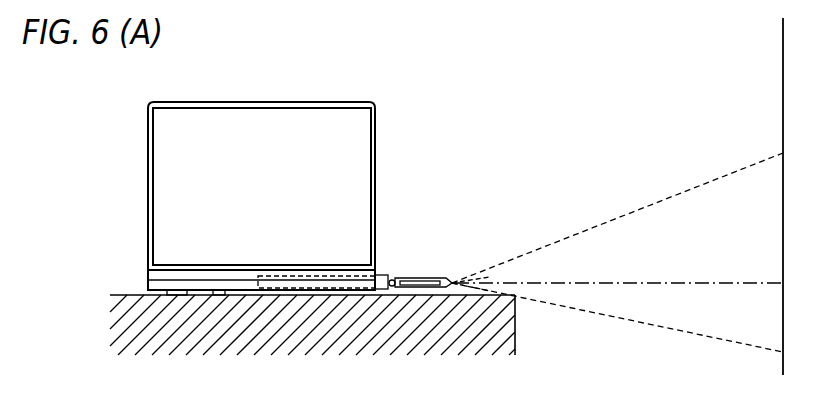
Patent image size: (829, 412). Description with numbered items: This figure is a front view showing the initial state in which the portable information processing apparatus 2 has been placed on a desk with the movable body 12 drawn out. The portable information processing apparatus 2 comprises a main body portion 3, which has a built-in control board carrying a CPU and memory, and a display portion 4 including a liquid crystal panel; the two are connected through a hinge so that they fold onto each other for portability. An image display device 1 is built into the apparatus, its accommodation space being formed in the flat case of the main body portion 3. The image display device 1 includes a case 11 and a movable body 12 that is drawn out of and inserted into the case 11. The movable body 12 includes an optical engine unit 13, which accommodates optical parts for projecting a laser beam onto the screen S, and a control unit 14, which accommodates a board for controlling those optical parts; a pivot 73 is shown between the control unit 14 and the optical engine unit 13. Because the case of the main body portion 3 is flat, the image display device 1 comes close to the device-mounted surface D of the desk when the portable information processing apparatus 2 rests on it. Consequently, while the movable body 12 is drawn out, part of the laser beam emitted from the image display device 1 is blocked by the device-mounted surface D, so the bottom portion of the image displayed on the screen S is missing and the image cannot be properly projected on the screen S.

The image display device 1 is at (452, 270).
The portable information processing apparatus 2 is at (358, 95).
The main body portion 3 is at (225, 296).
The display portion 4 is at (241, 102).
The case 11 is at (318, 291).
The movable body 12 is at (413, 290).
The optical engine unit 13 is at (423, 278).
The control unit 14 is at (382, 274).
The pivot / hinge shaft 73 is at (393, 291).
The device-mounted surface D is at (128, 294).
The screen S is at (783, 68).